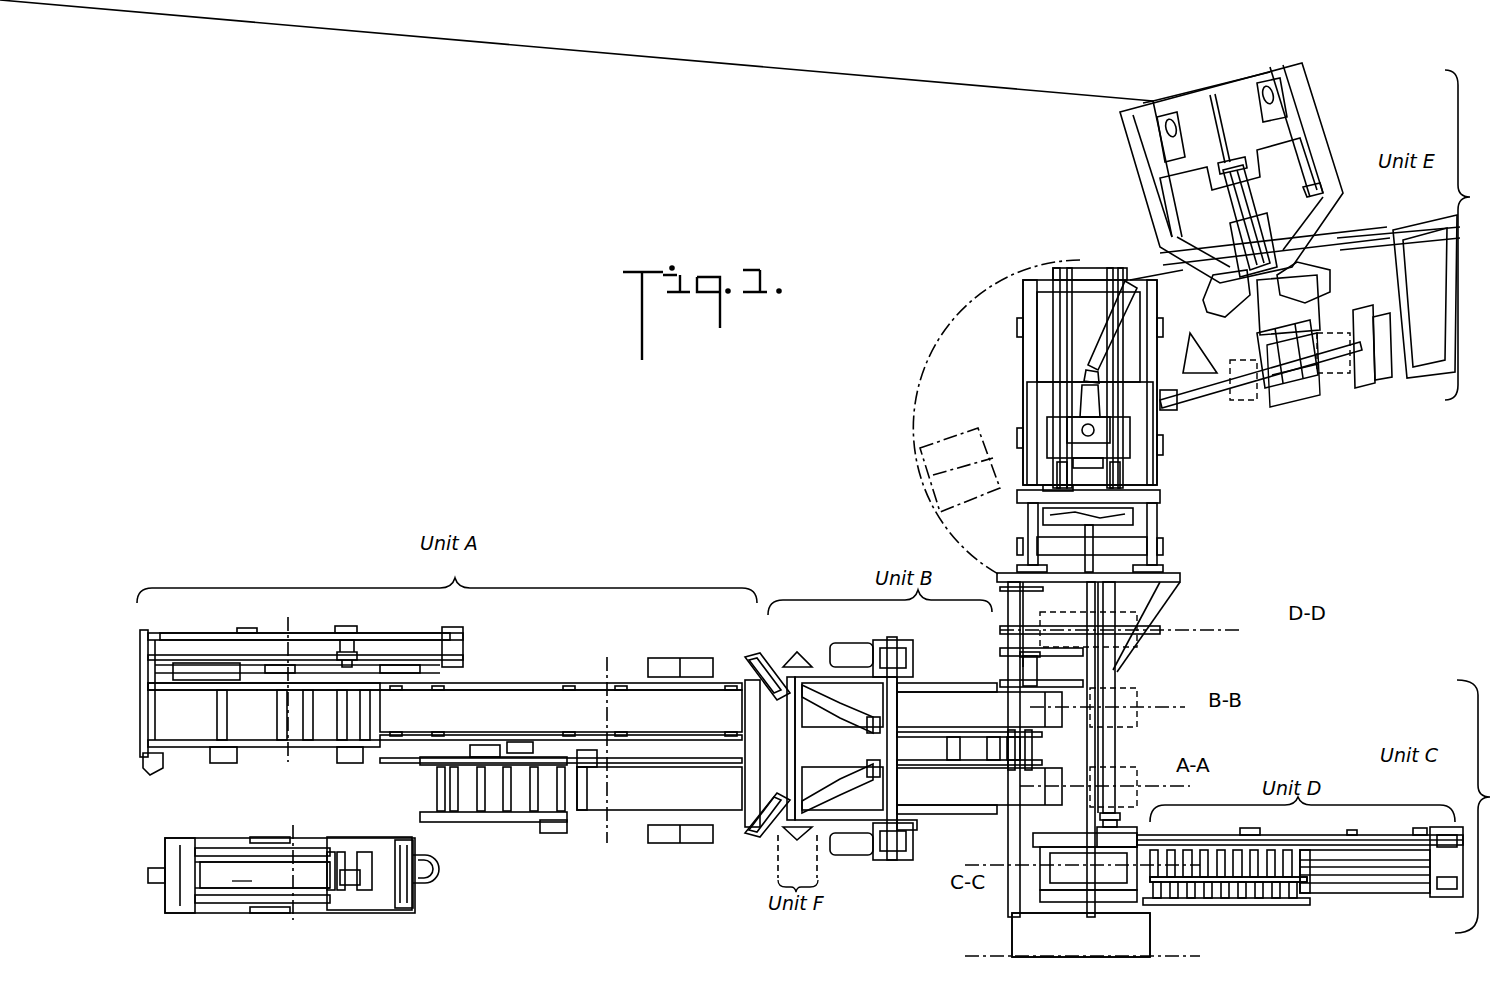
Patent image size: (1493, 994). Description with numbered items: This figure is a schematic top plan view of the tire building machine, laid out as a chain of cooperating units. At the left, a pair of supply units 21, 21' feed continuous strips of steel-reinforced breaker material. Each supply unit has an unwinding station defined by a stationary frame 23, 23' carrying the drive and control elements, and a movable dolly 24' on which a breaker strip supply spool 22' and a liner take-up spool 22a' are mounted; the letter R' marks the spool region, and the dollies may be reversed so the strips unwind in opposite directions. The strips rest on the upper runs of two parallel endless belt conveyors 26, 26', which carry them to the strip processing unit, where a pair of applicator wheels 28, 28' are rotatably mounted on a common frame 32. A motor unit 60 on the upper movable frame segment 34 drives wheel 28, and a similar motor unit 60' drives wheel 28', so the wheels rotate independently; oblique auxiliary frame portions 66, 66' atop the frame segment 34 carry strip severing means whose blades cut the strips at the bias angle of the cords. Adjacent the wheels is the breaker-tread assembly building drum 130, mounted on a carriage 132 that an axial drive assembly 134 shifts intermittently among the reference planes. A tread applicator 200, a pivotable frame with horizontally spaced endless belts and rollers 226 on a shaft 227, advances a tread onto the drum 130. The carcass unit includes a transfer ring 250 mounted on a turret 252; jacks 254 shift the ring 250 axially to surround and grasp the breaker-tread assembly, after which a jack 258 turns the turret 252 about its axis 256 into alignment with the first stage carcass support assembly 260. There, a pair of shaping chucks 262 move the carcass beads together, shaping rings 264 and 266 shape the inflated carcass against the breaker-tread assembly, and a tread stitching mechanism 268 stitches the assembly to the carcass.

The stationary frame 23' is at (305, 617).
The supply unit 21' is at (264, 738).
The stationary frame 23 is at (493, 813).
The supply unit 21 is at (621, 818).
The endless belt conveyor 26' is at (669, 663).
The endless belt conveyor 26 is at (665, 831).
The breaker strip supply spool 22' is at (265, 902).
The liner take-up spool 22a' is at (346, 907).
The movable dolly 24' is at (419, 893).
The reel R' is at (242, 871).
The common frame 32 is at (815, 660).
The motor unit 60' is at (852, 640).
The motor unit 60 is at (851, 864).
The auxiliary frame portion 66' is at (842, 709).
The auxiliary frame portion 66 is at (841, 786).
The applicator wheel 28' is at (979, 676).
The applicator wheel 28 is at (979, 814).
The upper movable frame segment 34 is at (930, 843).
The breaker-tread assembly building drum 130 is at (1143, 647).
The carriage 132 is at (1035, 893).
The axial drive assembly 134 is at (1140, 926).
The rollers 226 is at (1268, 857).
The roller shaft 227 is at (1245, 880).
The tread applicator 200 is at (1305, 911).
The transfer ring 250 is at (1160, 498).
The turret 252 is at (1120, 445).
The jacks 254 is at (1057, 468).
The turret axis 256 is at (1085, 430).
The jack 258 is at (1097, 357).
The carcass shaping ring 266 is at (1047, 518).
The tread stitching mechanism 268 is at (1266, 331).
The carcass shaping ring 264 is at (1370, 385).
The first stage carcass support assembly 260 is at (1365, 396).
The shaping chucks 262 is at (1243, 400).